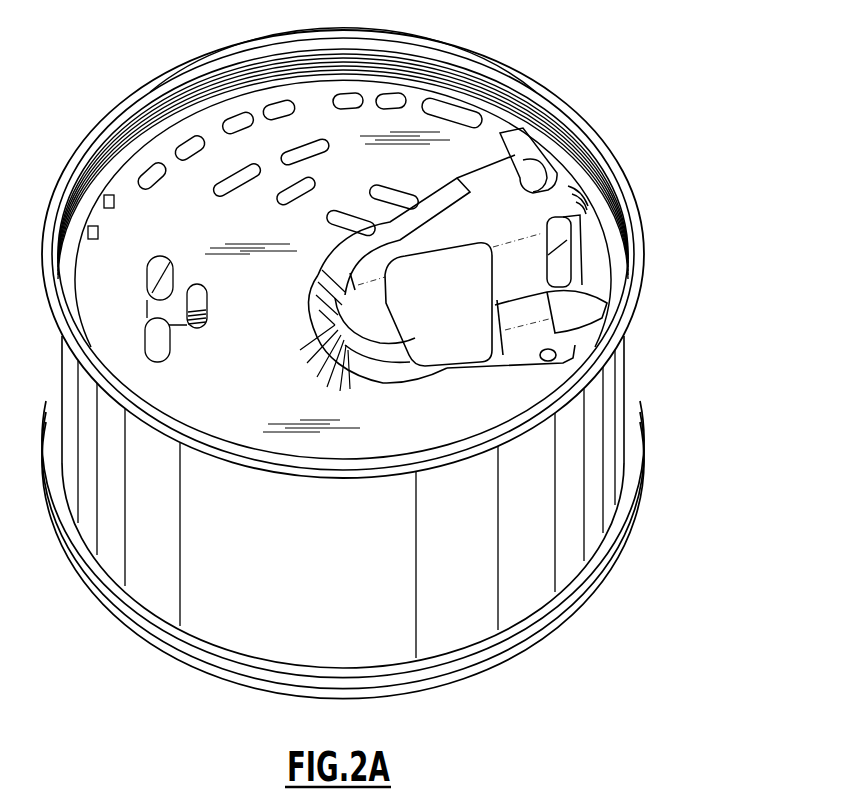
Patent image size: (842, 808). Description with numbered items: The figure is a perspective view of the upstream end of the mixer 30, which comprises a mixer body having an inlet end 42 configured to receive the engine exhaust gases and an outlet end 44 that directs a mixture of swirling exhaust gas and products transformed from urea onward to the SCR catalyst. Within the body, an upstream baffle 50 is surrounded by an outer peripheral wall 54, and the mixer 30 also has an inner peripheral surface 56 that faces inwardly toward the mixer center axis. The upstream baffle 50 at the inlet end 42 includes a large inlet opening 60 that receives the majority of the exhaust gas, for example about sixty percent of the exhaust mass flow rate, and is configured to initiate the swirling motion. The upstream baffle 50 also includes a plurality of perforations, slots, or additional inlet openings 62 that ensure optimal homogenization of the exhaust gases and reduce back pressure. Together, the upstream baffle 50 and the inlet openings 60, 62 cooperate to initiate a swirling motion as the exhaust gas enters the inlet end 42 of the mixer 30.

The mixer 30 is at (735, 172).
The inlet end 42 is at (588, 118).
The outlet end 44 is at (600, 598).
The upstream baffle 50 is at (143, 375).
The outer peripheral wall 54 is at (590, 450).
The inner peripheral surface 56 is at (620, 264).
The large inlet opening 60 is at (608, 336).
The inlet openings 62 is at (348, 100).